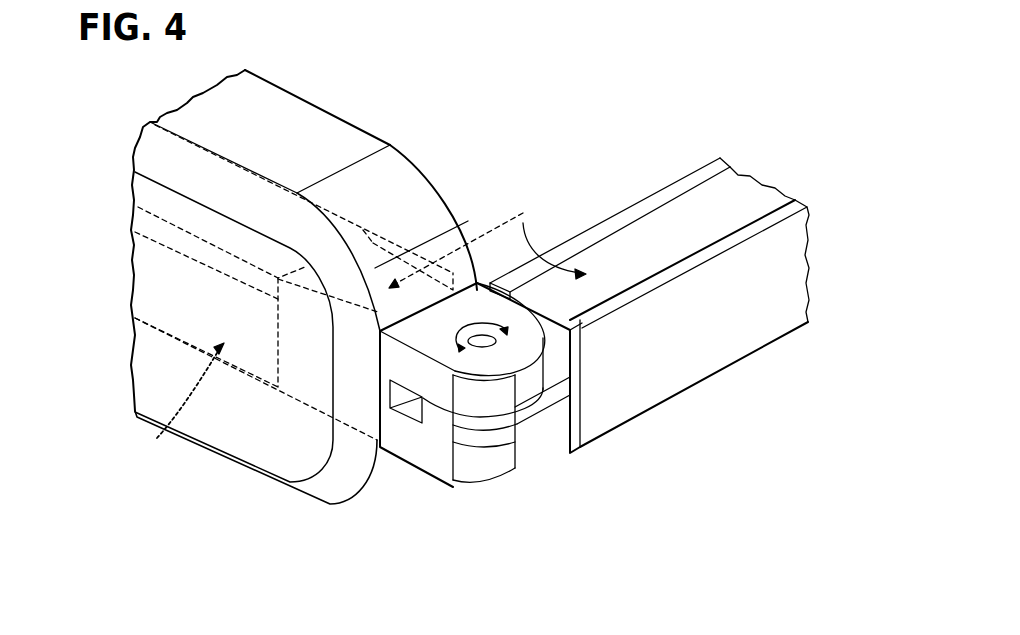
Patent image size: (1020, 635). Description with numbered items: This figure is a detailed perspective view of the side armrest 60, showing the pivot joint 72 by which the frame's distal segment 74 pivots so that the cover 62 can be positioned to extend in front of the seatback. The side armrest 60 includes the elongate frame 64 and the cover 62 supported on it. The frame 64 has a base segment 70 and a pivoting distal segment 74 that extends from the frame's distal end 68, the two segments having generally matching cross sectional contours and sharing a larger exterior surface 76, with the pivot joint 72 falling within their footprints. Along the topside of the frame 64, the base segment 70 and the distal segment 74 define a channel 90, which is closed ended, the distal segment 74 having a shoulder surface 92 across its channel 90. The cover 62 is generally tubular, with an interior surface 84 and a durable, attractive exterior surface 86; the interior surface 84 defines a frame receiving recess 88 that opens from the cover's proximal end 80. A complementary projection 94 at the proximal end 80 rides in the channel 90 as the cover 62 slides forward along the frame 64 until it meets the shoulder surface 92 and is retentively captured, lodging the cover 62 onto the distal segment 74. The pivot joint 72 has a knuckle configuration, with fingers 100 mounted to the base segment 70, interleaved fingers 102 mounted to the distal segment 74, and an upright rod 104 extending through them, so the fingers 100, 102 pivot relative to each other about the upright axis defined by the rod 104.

The side armrest 60 is at (135, 146).
The cover 62 is at (132, 203).
The frame 64 is at (793, 333).
The distal end 68 is at (276, 314).
The base segment 70 is at (740, 340).
The pivot joint 72 is at (518, 427).
The distal segment 74 is at (353, 423).
The exterior surface 76 is at (312, 389).
The proximal end 80 is at (418, 160).
The interior surface 84 is at (186, 324).
The exterior surface 86 is at (278, 151).
The frame receiving recess 88 is at (176, 398).
The channel 90 is at (559, 228).
The shoulder surface 92 is at (306, 268).
The projection 94 is at (406, 318).
The fingers 100 is at (485, 430).
The interleaved fingers 102 is at (462, 395).
The rod 104 is at (492, 339).